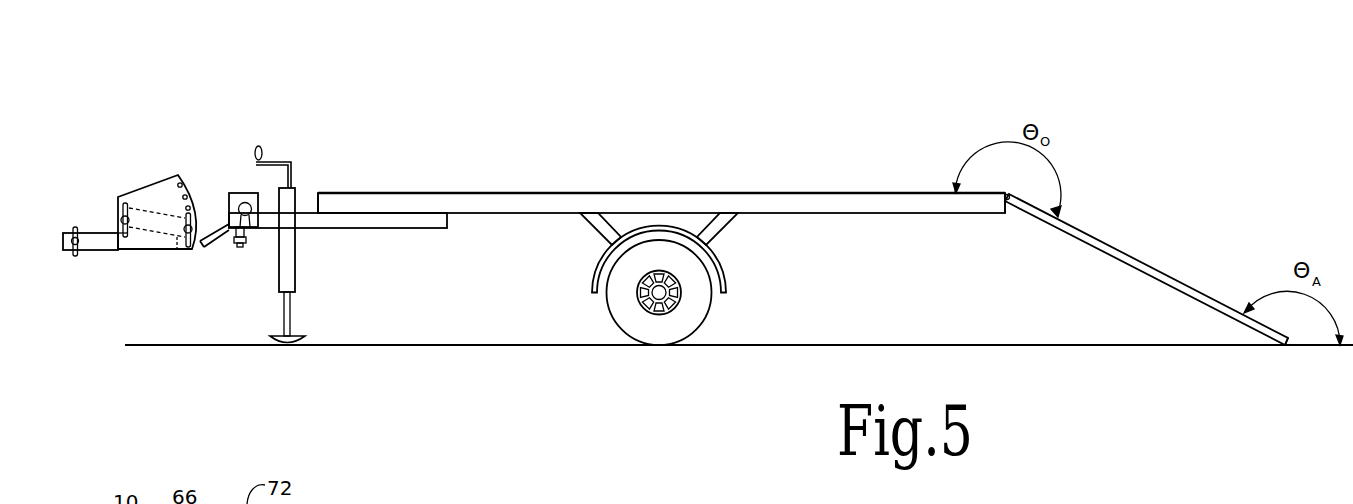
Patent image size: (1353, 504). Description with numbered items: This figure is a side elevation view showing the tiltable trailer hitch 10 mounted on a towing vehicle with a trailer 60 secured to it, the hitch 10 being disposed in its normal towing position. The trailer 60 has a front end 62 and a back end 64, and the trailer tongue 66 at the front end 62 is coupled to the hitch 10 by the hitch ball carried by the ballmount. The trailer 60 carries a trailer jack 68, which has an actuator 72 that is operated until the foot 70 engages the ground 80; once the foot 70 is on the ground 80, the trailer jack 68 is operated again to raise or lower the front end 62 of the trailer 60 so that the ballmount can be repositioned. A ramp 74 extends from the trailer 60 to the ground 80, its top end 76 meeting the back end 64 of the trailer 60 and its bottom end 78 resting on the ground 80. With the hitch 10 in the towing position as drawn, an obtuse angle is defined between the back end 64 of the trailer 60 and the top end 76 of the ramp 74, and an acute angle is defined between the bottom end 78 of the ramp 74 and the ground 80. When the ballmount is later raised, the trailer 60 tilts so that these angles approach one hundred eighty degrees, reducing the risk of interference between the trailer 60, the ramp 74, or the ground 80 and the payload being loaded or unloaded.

The tiltable trailer hitch 10 is at (143, 168).
The trailer 60 is at (628, 189).
The front end 62 is at (335, 191).
The back end 64 is at (910, 192).
The trailer tongue 66 is at (242, 193).
The trailer jack 68 is at (285, 268).
The foot 70 is at (287, 347).
The actuator 72 is at (258, 145).
The ramp 74 is at (1098, 250).
The top end 76 is at (1030, 198).
The bottom end 78 is at (1232, 316).
The ground 80 is at (905, 345).